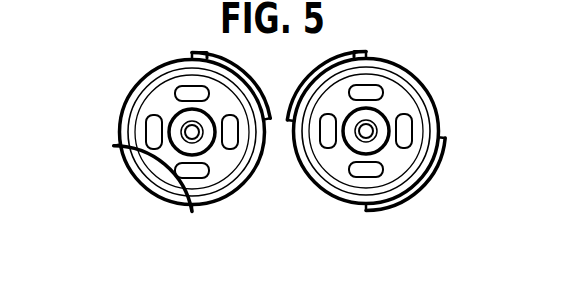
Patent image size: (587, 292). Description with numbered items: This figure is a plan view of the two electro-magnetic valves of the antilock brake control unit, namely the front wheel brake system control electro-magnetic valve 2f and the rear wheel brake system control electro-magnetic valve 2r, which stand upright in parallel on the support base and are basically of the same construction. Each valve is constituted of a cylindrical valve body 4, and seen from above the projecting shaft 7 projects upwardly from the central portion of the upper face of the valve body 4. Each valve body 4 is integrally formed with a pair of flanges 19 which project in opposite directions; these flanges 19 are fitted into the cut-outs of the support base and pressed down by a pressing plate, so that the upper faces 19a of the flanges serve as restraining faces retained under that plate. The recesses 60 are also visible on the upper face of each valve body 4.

The rear wheel brake system control electro-magnetic valve 2r is at (137, 79).
The front wheel brake system control electro-magnetic valve 2f is at (424, 82).
The valve body 4 is at (166, 62).
The projecting shaft 7 is at (205, 146).
The flange 19 is at (205, 53).
The upper face of flange 19a is at (298, 91).
The recess 60 is at (150, 134).